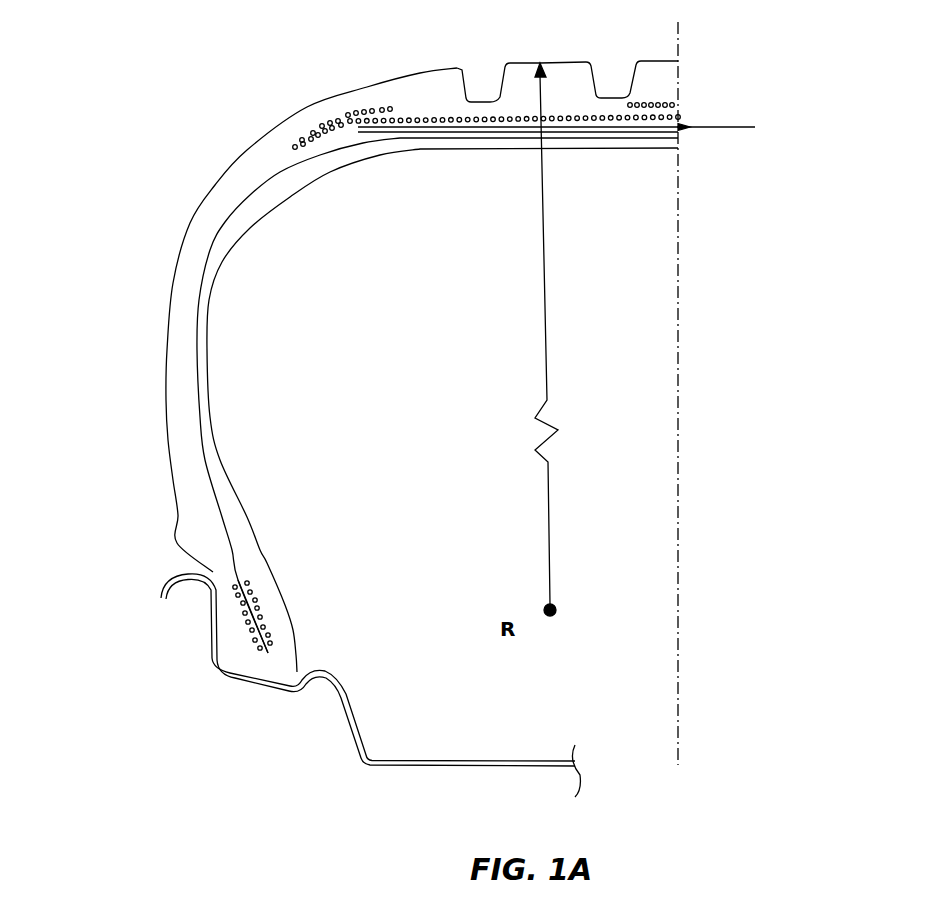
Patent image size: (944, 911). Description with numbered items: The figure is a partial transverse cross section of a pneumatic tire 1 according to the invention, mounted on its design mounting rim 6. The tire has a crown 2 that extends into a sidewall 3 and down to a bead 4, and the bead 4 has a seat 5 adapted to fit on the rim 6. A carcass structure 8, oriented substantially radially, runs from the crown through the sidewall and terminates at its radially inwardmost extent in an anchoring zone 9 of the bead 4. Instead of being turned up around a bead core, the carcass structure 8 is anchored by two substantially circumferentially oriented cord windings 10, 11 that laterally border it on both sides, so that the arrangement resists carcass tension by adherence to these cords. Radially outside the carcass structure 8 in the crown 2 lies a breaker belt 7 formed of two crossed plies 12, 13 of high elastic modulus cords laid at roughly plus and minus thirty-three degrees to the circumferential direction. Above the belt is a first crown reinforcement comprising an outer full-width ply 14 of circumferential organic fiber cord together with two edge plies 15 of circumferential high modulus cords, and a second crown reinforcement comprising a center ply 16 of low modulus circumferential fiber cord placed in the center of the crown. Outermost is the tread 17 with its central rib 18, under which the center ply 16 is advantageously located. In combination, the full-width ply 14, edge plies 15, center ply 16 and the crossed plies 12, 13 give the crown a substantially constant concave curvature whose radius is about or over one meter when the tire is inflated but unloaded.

The pneumatic tire 1 is at (160, 137).
The crown 2 is at (313, 110).
The sidewall 3 is at (175, 352).
The bead 4 is at (230, 620).
The seat 5 is at (250, 673).
The design mounting rim 6 is at (345, 718).
The breaker belt 7 is at (567, 129).
The carcass structure 8 is at (250, 208).
The anchoring zone 9 is at (258, 625).
The circumferentially oriented cord winding 10 is at (250, 616).
The circumferentially oriented cord winding 11 is at (272, 643).
The crossed ply 12 is at (558, 130).
The crossed ply 13 is at (578, 124).
The outer full-width ply 14 is at (408, 122).
The edge plies 15 is at (363, 108).
The center ply 16 is at (652, 103).
The tread 17 is at (440, 93).
The central rib 18 is at (662, 78).